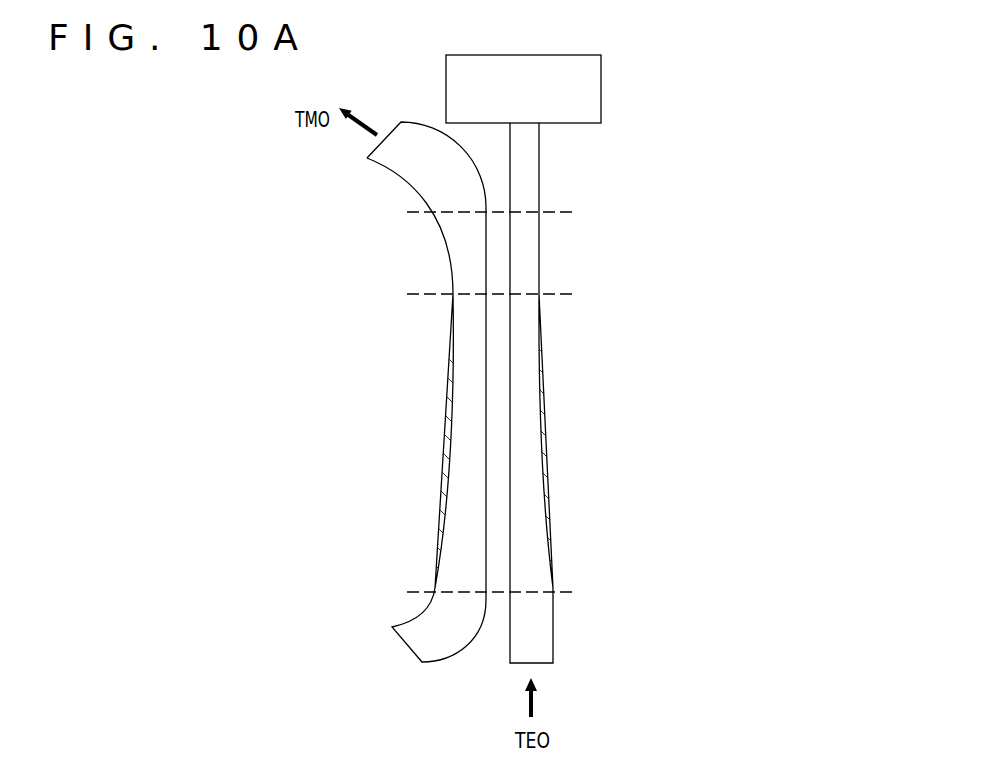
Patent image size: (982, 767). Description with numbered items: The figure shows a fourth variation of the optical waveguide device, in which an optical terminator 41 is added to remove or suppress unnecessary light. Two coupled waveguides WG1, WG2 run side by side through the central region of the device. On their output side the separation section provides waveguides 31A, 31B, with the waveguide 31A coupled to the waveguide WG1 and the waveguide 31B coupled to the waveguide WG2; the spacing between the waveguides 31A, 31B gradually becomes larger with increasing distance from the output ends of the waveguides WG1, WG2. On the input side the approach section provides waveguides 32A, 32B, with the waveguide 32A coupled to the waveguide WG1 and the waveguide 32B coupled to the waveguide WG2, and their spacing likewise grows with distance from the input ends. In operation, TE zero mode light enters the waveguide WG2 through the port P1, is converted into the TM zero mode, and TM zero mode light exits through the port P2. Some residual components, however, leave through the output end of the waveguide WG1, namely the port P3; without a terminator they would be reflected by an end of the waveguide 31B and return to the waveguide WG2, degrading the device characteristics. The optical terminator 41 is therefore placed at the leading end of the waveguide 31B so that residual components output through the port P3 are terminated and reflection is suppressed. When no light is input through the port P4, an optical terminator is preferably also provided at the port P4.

The optical terminator 41 is at (601, 87).
The waveguide 31A is at (393, 168).
The waveguide 31B is at (540, 177).
The waveguide WG1 is at (450, 577).
The waveguide WG2 is at (542, 573).
The waveguide 32A is at (405, 644).
The waveguide 32B is at (553, 635).
The port P1 is at (532, 607).
The port P2 is at (490, 194).
The port P3 is at (525, 212).
The port P4 is at (448, 607).